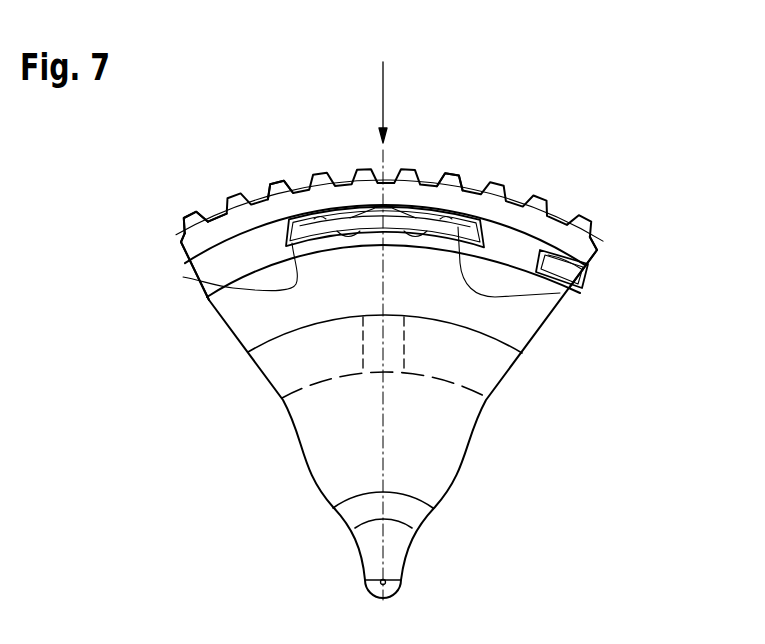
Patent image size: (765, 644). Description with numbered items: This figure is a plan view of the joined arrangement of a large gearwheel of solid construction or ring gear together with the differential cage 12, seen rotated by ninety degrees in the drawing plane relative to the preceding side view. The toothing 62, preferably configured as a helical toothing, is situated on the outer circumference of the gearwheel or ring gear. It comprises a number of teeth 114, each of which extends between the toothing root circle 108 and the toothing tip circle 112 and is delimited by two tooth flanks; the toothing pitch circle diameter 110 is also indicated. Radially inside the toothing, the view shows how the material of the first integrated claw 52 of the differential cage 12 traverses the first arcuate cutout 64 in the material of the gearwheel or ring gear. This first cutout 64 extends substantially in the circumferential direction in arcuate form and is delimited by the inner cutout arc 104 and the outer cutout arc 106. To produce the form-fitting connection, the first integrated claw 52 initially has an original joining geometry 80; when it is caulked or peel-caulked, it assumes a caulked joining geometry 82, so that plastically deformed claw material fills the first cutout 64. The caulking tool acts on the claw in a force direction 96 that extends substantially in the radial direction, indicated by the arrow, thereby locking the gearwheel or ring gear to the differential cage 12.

The differential cage 12 is at (525, 328).
The first integrated claw 52 is at (346, 214).
The toothing 62 is at (307, 162).
The first arcuate cutout 64 is at (553, 215).
The original joining geometry 80 is at (466, 212).
The caulked joining geometry 82 is at (468, 210).
The force direction 96 is at (386, 83).
The inner cutout arc 104 is at (183, 277).
The outer cutout arc 106 is at (289, 200).
The toothing root circle 108 is at (181, 241).
The toothing pitch circle diameter 110 is at (215, 211).
The toothing tip circle 112 is at (190, 215).
The tooth 114 is at (406, 205).